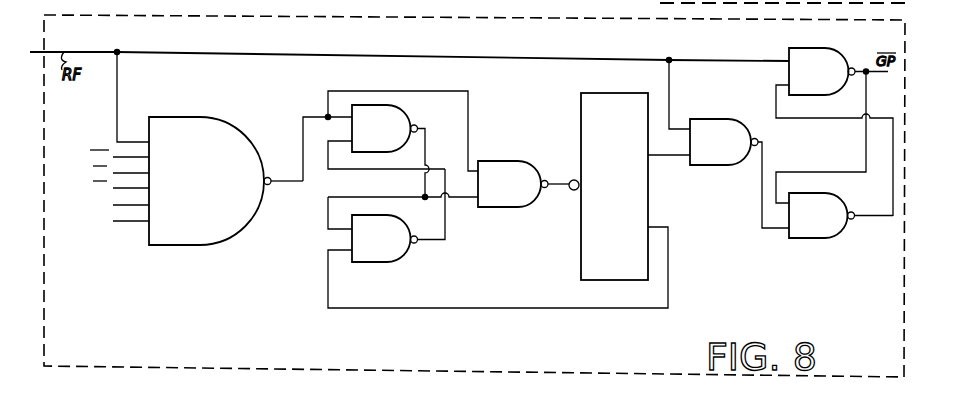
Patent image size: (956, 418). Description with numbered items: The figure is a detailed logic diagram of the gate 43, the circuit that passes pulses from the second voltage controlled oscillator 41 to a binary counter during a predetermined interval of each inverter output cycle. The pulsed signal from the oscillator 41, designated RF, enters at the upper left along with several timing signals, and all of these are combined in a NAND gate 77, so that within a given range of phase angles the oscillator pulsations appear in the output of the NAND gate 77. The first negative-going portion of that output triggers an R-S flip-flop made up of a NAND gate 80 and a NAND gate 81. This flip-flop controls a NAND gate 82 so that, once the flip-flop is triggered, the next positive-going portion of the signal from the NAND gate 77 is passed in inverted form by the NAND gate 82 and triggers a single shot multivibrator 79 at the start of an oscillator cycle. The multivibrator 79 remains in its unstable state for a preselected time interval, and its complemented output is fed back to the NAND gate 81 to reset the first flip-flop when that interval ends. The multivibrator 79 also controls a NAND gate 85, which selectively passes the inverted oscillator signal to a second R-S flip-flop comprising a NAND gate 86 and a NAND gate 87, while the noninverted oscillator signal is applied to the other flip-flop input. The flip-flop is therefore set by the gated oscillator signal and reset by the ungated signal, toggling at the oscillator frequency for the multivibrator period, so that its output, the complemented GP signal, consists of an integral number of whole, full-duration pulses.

The second voltage controlled oscillator 41 is at (55, 33).
The gate 43 is at (168, 367).
The NAND gate 77 is at (213, 246).
The single shot multivibrator 79 is at (630, 93).
The NAND gate 80 is at (409, 117).
The NAND gate 81 is at (388, 263).
The NAND gate 82 is at (500, 161).
The NAND gate 85 is at (727, 166).
The NAND gate 86 is at (797, 94).
The NAND gate 87 is at (827, 239).